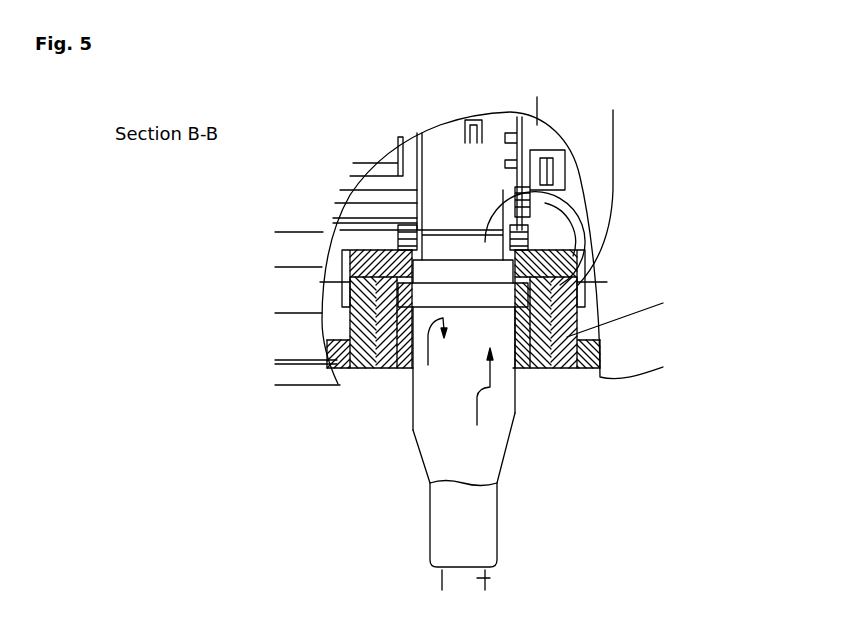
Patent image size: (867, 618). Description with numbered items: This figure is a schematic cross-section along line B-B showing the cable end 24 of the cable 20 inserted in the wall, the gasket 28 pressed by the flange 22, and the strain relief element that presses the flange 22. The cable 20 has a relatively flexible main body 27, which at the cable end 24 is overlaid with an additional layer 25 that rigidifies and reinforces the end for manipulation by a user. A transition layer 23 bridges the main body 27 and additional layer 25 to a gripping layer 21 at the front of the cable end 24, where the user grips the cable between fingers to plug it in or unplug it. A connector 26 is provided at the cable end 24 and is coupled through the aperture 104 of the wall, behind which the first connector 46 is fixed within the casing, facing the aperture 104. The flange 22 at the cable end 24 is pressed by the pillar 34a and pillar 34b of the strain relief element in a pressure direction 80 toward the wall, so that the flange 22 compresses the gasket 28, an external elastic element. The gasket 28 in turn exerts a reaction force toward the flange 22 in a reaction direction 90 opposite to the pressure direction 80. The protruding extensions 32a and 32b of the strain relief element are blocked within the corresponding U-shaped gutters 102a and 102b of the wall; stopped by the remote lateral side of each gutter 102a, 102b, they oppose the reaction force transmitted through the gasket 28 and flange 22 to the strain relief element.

The cable 20 is at (551, 511).
The gripping layer 21 is at (510, 412).
The flange 22 is at (447, 290).
The transition layer 23 is at (500, 447).
The cable end 24 is at (548, 277).
The additional layer 25 is at (445, 517).
The connector 26 is at (562, 190).
The main body 27 is at (490, 577).
The gasket 28 is at (362, 221).
The protruding extension 32a is at (555, 312).
The protruding extension 32b is at (353, 272).
The pillar 34a is at (543, 367).
The pillar 34b is at (372, 368).
The first connector 46 is at (493, 165).
The pressure direction 80 is at (478, 399).
The reaction direction 90 is at (434, 354).
The gutter 102a is at (548, 262).
The gutter 102b is at (362, 282).
The aperture 104 is at (485, 267).